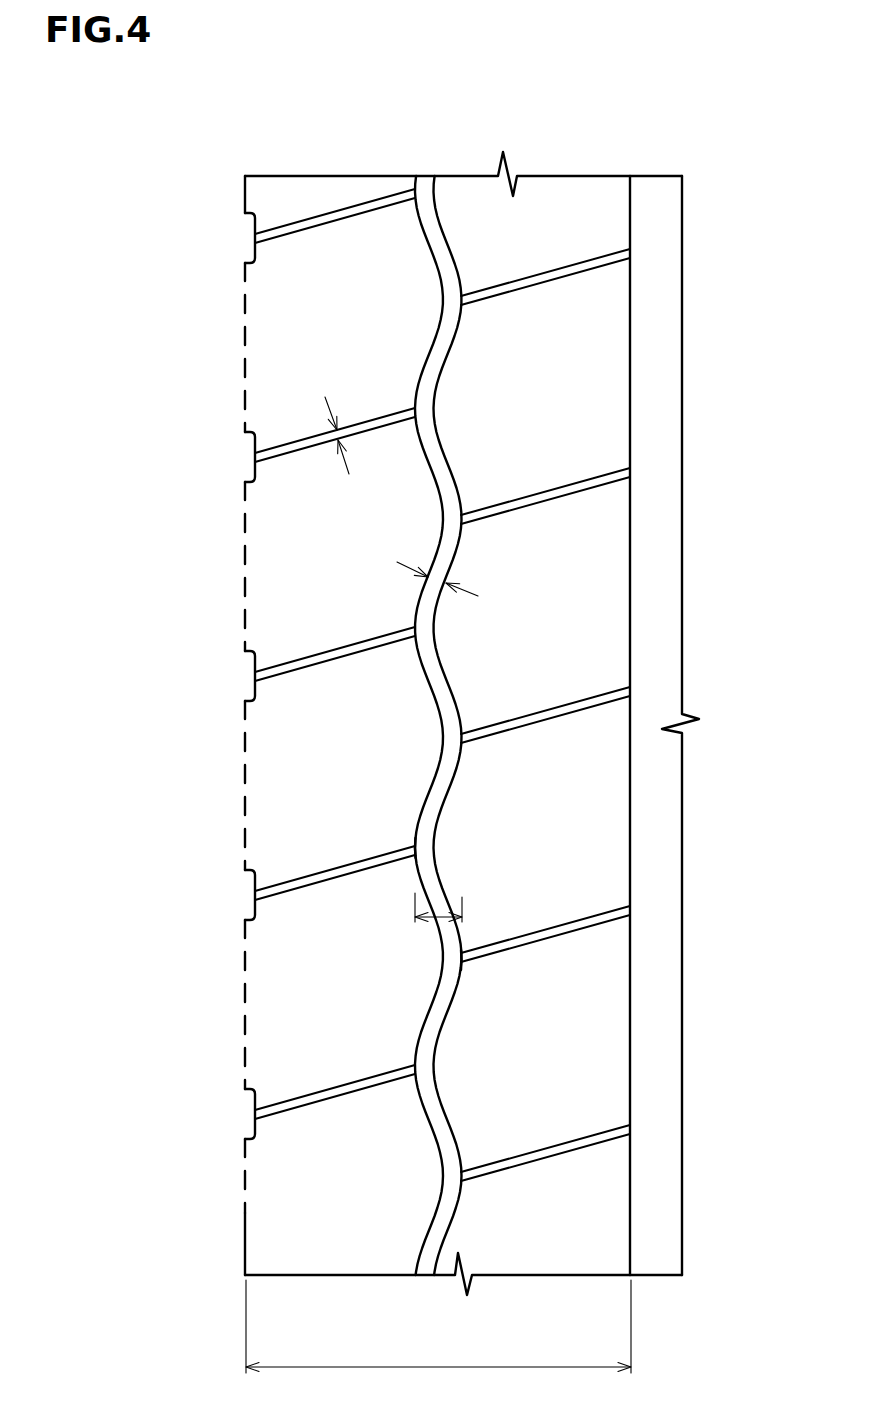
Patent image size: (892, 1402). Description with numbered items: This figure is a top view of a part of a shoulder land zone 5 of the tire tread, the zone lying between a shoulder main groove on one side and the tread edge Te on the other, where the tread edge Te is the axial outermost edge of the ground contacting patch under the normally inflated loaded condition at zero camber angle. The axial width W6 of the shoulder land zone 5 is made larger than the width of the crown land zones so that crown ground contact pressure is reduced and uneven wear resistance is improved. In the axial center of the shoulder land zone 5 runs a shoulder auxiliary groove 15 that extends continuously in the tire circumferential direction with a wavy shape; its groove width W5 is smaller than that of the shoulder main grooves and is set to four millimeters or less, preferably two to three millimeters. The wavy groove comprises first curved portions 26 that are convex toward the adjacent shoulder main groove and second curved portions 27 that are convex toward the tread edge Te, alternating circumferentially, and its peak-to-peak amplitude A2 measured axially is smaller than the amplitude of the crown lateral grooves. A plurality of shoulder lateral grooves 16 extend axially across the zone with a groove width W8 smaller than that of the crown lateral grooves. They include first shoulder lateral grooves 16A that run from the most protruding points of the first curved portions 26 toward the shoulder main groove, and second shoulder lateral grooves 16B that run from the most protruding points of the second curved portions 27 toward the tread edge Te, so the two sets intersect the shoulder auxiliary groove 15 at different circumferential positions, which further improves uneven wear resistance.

The shoulder land zone 5 is at (477, 237).
The tread edge Te is at (245, 228).
The shoulder auxiliary groove 15 is at (427, 212).
The shoulder lateral grooves 16 is at (493, 685).
The first shoulder lateral grooves 16A is at (570, 710).
The second shoulder lateral grooves 16B is at (372, 647).
The first curved portions 26 is at (451, 978).
The second curved portions 27 is at (427, 839).
The groove width of the shoulder auxiliary groove W5 is at (452, 563).
The width of the shoulder land zone W6 is at (438, 1326).
The groove width of the shoulder lateral grooves W8 is at (303, 438).
The peak-to-peak amplitude of the shoulder auxiliary groove A2 is at (441, 910).